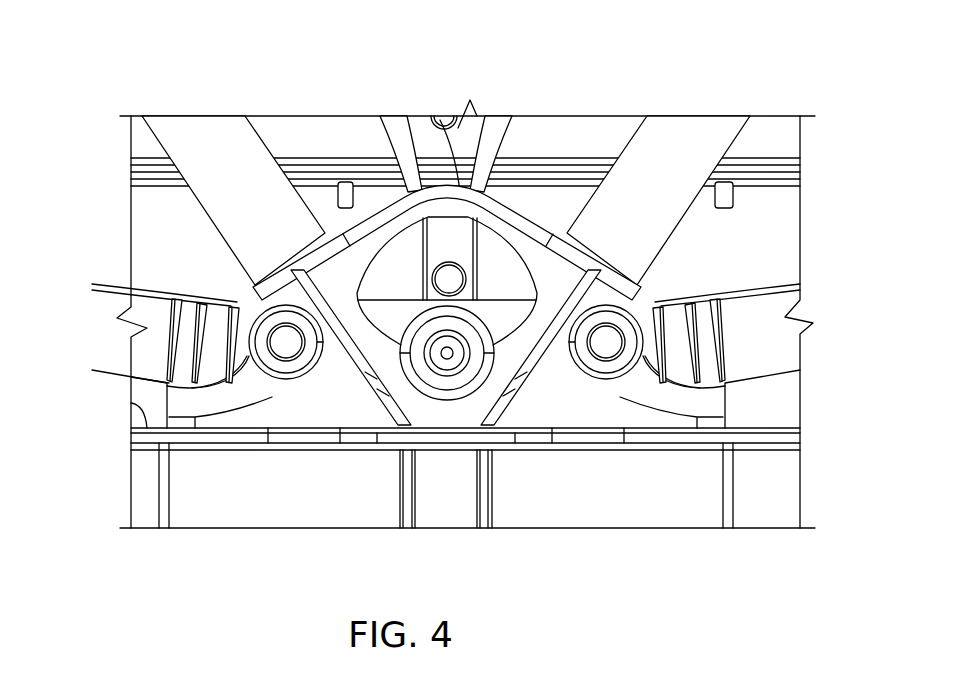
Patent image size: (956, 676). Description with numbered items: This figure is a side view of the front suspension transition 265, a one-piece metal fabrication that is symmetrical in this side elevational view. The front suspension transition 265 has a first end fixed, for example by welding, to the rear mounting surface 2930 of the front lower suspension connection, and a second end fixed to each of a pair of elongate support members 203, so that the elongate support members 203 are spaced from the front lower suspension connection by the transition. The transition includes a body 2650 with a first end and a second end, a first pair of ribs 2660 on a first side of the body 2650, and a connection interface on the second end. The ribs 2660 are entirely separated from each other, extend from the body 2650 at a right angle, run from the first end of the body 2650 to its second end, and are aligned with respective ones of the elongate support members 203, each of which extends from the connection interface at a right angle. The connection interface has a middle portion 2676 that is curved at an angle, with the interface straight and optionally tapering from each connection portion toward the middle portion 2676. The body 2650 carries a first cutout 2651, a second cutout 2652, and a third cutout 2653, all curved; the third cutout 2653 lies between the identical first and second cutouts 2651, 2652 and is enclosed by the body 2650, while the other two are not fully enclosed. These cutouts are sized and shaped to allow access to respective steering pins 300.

The elongate support member 203 is at (207, 130).
The front suspension transition 265 is at (532, 193).
The third cutout 2653 is at (416, 248).
The middle portion 2676 is at (438, 116).
The body 2650 is at (435, 407).
The first pair of ribs 2660 is at (373, 378).
The first cutout 2651 is at (255, 392).
The second cutout 2652 is at (640, 390).
The rear mounting surface 2930 is at (130, 403).
The steering pin 300 is at (262, 318).